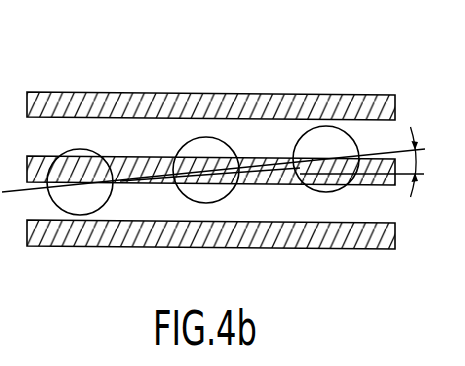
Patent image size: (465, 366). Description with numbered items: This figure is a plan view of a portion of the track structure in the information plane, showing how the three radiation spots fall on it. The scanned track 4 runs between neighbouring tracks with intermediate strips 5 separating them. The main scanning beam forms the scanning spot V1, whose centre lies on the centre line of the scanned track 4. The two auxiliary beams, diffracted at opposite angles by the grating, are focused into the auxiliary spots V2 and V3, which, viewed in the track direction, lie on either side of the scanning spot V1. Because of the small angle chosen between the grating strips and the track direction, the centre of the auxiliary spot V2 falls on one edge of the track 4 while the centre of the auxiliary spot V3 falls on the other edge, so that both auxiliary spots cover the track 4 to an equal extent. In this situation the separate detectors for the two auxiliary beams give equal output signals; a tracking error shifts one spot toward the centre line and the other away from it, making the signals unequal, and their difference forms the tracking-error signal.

The track 4 is at (266, 180).
The intermediate strip 5 is at (125, 136).
The scanning spot V1 is at (208, 198).
The auxiliary spot V2 is at (80, 206).
The auxiliary spot V3 is at (328, 178).